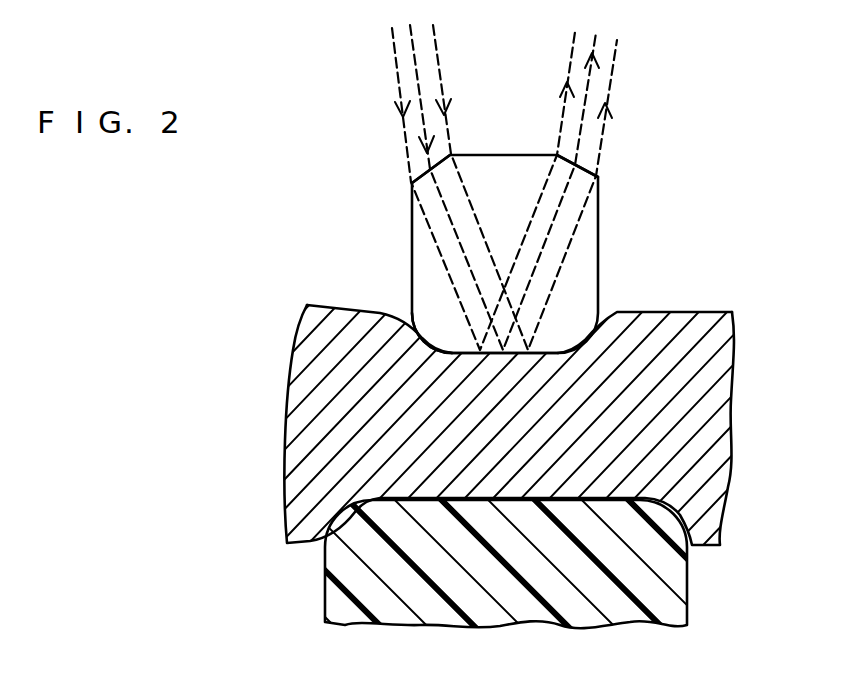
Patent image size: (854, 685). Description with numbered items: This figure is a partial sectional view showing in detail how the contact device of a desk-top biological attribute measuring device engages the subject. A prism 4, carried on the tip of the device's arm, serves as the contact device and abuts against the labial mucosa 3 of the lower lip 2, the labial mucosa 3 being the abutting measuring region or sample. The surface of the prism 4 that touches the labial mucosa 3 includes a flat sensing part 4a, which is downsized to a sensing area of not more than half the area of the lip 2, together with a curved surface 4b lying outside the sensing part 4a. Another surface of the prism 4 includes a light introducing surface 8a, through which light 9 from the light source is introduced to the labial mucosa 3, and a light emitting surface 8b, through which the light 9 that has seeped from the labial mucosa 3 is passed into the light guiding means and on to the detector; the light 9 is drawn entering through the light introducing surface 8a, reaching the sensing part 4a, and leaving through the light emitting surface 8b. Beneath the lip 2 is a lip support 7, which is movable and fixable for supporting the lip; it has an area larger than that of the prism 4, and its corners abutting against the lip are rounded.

The lower lip 2 is at (692, 398).
The labial mucosa 3 is at (660, 312).
The prism 4 is at (495, 220).
The sensing part 4a is at (493, 350).
The curved surface 4b is at (413, 312).
The lip support 7 is at (662, 560).
The light introducing surface 8a is at (432, 170).
The light emitting surface 8b is at (587, 168).
The light 9 is at (392, 41).